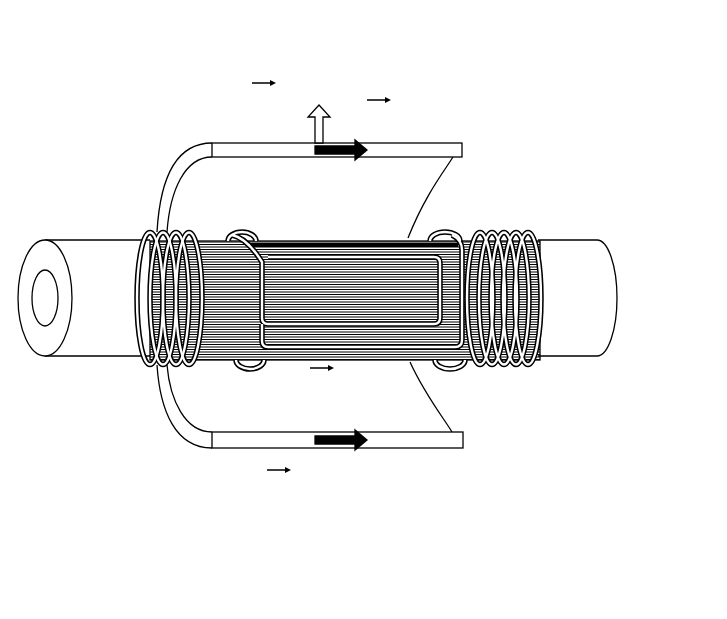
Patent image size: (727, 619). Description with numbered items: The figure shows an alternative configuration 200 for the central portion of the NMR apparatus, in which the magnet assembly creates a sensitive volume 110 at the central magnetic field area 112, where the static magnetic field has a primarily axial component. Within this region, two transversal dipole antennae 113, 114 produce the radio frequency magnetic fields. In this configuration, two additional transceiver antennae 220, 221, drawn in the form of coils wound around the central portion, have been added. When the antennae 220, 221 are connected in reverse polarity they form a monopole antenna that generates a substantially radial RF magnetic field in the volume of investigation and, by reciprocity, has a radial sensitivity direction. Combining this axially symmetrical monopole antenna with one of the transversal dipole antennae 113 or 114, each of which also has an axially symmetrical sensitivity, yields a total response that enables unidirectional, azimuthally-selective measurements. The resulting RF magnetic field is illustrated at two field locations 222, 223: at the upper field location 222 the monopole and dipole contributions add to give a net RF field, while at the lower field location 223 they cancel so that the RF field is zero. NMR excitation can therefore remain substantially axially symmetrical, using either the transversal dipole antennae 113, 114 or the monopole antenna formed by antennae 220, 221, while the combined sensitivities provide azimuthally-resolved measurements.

The alternative configuration 200 is at (586, 48).
The central magnetic field area 112 is at (523, 67).
The sensitive volume 110 is at (418, 148).
The transversal dipole antenna 113 is at (373, 253).
The transversal dipole antenna 114 is at (409, 330).
The transceiver antenna 220 is at (150, 230).
The transceiver antenna 221 is at (518, 232).
The field location 222 is at (339, 133).
The field location 223 is at (346, 460).